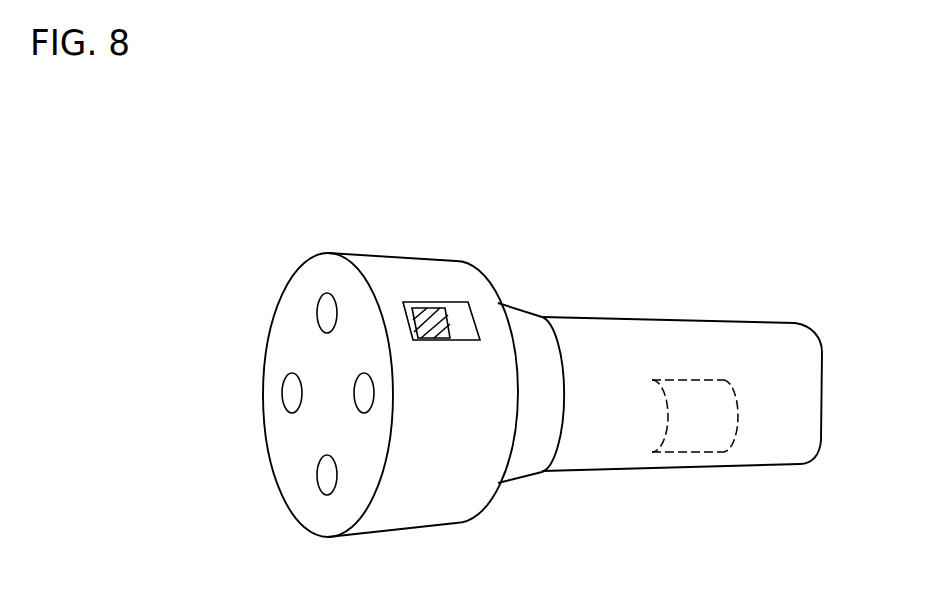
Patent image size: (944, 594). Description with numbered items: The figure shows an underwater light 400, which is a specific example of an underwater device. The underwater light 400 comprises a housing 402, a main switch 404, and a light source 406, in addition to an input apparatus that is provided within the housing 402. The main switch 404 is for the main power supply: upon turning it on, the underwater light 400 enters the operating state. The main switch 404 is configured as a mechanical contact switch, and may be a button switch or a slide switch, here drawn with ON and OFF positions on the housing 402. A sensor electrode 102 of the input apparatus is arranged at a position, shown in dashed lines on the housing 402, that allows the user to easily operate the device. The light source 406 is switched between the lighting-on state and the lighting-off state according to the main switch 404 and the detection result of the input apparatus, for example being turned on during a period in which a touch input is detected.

The underwater light 400 is at (525, 324).
The housing 402 is at (682, 316).
The main switch 404 is at (427, 305).
The light source 406 is at (284, 396).
The sensor electrode 102 is at (690, 452).